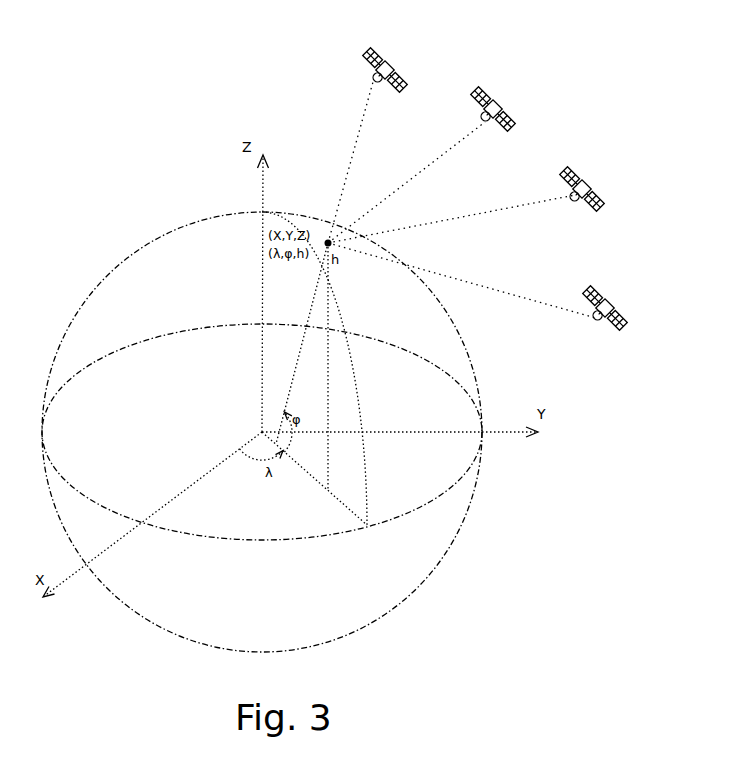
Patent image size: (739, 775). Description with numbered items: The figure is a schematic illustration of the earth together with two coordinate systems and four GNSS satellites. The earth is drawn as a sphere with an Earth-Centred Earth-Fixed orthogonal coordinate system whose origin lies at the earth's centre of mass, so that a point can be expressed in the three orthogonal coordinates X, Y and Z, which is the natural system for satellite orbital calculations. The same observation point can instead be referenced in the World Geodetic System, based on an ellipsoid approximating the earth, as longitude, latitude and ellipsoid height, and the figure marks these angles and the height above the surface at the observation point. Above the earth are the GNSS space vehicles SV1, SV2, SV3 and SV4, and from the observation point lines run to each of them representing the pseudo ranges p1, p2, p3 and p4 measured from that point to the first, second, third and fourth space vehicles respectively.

The GNSS space vehicle SV1 is at (392, 73).
The GNSS space vehicle SV2 is at (500, 112).
The GNSS space vehicle SV3 is at (589, 192).
The GNSS space vehicle SV4 is at (612, 311).
The pseudo range p1 is at (350, 162).
The pseudo range p2 is at (406, 182).
The pseudo range p3 is at (451, 219).
The pseudo range p4 is at (462, 280).